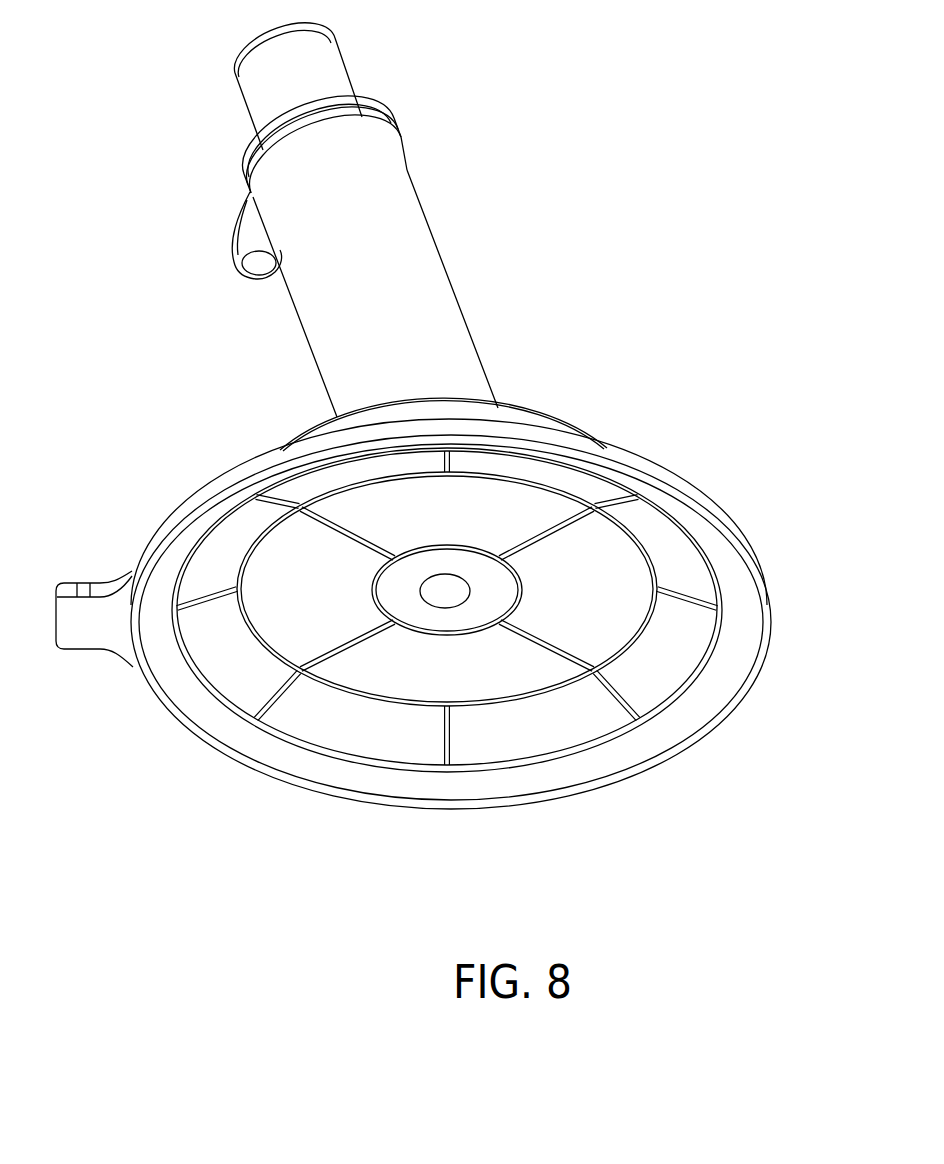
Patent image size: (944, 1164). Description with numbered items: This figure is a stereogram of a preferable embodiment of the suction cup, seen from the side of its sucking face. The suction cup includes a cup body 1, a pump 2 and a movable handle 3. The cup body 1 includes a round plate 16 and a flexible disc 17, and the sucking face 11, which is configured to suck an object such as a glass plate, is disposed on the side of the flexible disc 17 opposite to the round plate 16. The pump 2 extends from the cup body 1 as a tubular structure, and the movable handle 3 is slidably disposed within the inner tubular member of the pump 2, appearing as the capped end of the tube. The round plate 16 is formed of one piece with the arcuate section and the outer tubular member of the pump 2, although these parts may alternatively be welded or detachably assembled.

The cup body 1 is at (466, 658).
The pump 2 is at (428, 214).
The movable handle 3 is at (318, 75).
The sucking face 11 is at (532, 688).
The round plate 16 is at (549, 429).
The flexible disc 17 is at (612, 580).